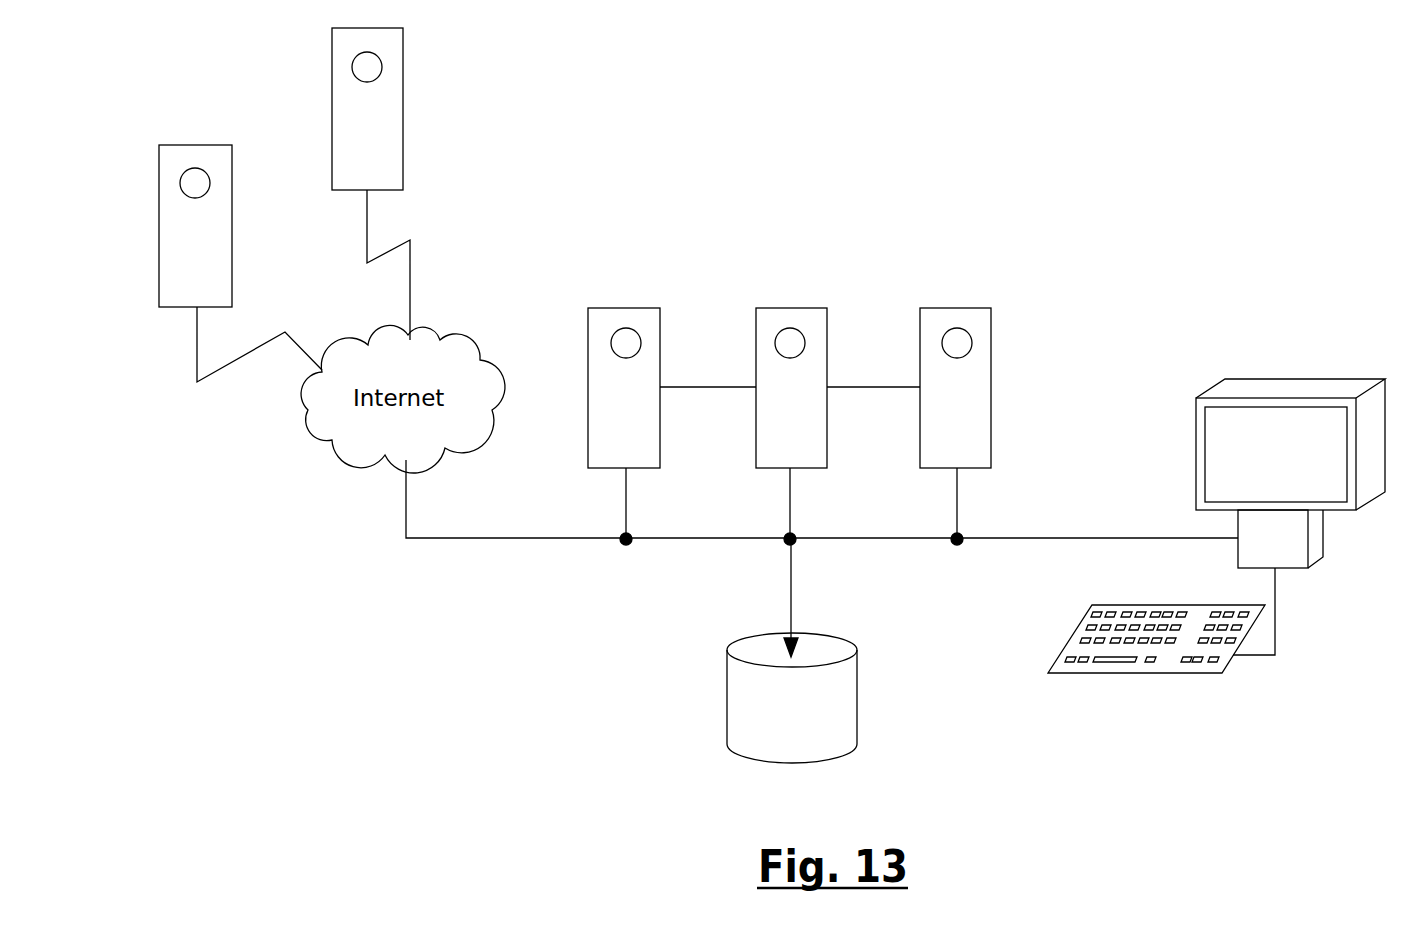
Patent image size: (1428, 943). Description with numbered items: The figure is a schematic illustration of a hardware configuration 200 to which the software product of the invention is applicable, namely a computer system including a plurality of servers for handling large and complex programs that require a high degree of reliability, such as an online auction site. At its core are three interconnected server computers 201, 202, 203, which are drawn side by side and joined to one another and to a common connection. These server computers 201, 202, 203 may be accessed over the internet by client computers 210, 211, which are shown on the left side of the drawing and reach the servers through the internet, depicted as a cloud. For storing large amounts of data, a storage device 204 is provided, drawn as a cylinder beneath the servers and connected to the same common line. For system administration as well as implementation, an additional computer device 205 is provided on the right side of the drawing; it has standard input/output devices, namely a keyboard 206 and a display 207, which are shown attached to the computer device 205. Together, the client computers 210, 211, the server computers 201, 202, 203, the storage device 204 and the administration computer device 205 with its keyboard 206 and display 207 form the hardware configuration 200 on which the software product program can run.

The system 200 is at (1095, 233).
The server computer 201 is at (952, 306).
The server computer 202 is at (785, 306).
The server computer 203 is at (620, 306).
The storage device 204 is at (727, 692).
The computer device 205 is at (1315, 543).
The keyboard 206 is at (1143, 673).
The display 207 is at (1290, 414).
The client computer 210 is at (232, 218).
The client computer 211 is at (405, 103).